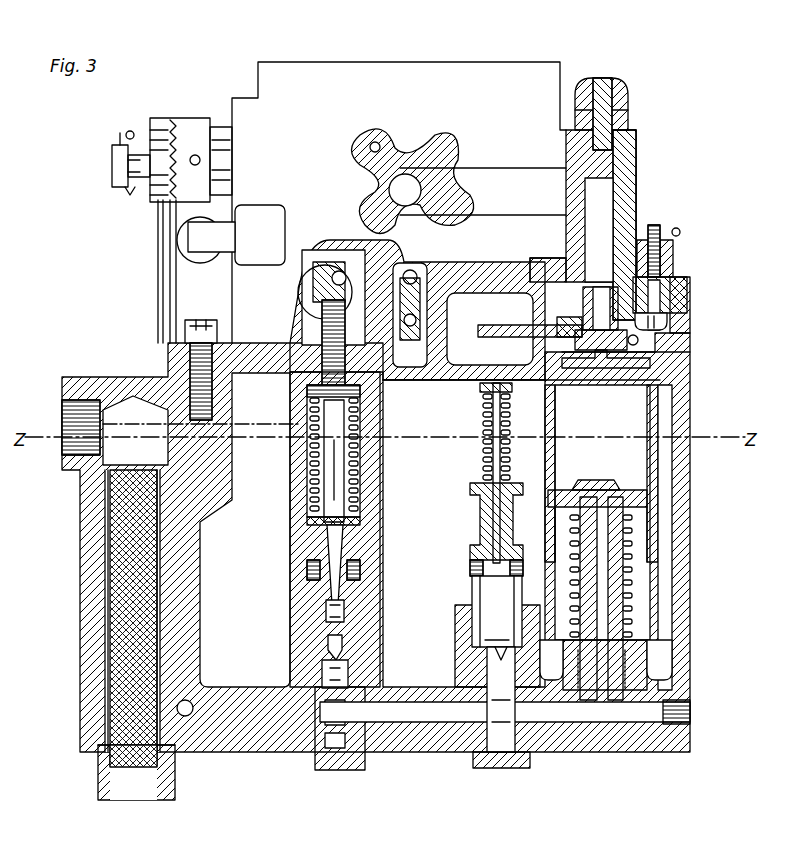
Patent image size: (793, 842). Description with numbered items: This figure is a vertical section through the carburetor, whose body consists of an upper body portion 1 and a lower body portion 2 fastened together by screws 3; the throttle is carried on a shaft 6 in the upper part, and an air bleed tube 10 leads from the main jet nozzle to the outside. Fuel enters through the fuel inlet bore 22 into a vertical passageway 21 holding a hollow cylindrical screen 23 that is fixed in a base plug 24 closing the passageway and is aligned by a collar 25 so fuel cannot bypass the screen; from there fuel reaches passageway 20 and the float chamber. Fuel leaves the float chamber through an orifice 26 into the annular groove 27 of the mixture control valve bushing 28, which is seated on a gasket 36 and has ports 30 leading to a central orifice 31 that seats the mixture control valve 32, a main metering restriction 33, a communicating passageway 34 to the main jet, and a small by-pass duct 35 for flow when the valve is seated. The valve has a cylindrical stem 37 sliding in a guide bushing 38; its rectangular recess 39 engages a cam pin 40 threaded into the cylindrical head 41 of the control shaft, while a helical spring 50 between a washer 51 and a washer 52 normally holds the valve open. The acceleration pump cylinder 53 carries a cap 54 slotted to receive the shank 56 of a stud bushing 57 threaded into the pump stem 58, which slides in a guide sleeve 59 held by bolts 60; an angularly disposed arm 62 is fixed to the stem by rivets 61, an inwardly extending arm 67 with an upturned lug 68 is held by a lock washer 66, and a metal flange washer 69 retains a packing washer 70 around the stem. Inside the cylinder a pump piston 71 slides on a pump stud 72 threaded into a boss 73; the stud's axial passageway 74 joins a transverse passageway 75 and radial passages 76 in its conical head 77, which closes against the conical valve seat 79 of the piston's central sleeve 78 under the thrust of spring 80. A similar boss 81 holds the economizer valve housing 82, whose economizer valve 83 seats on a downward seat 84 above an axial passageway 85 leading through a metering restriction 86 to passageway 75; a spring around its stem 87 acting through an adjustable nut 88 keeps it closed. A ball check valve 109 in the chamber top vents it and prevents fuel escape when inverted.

The upper body portion 1 is at (168, 362).
The lower body portion 2 is at (84, 390).
The screws 3 is at (212, 338).
The throttle shaft 6 is at (112, 162).
The air bleed tube 10 is at (163, 440).
The passageway 20 is at (190, 716).
The vertical passageway 21 is at (104, 632).
The fuel inlet bore 22 is at (80, 424).
The hollow cylindrical screen 23 is at (110, 590).
The base plug 24 is at (100, 785).
The collar 25 is at (100, 488).
The orifice 26 is at (245, 530).
The annular groove 27 is at (366, 584).
The mixture control valve bushing 28 is at (362, 555).
The ports 30 is at (352, 568).
The central orifice 31 is at (340, 612).
The mixture control valve 32 is at (340, 494).
The main metering restriction 33 is at (320, 668).
The communicating passageway 34 is at (330, 708).
The by-pass duct 35 is at (325, 624).
The gasket 36 is at (350, 644).
The cylindrical stem 37 is at (280, 434).
The guide bushing 38 is at (292, 372).
The rectangular recess 39 is at (336, 272).
The cam pin 40 is at (340, 275).
The cylindrical head 41 is at (300, 284).
The helical spring 50 is at (360, 444).
The washer 51 is at (360, 518).
The washer 52 is at (378, 388).
The acceleration pump cylinder 53 is at (660, 445).
The cap 54 is at (650, 372).
The shank 56 is at (645, 385).
The stud bushing 57 is at (630, 354).
The pump stem 58 is at (636, 148).
The guide sleeve 59 is at (638, 182).
The bolts 60 is at (658, 238).
The rivets 61 is at (628, 92).
The angularly disposed arm 62 is at (608, 78).
The lock washer 66 is at (640, 338).
The inwardly extending arm 67 is at (500, 324).
The upturned lug 68 is at (520, 322).
The metal flange washer 69 is at (628, 322).
The packing washer 70 is at (648, 310).
The pump piston 71 is at (640, 497).
The pump stud 72 is at (630, 628).
The boss 73 is at (652, 665).
The axial passageway 74 is at (604, 590).
The transverse passageway 75 is at (640, 714).
The radial passages 76 is at (612, 488).
The conical head 77 is at (592, 488).
The central sleeve 78 is at (650, 540).
The conical valve seat 79 is at (640, 515).
The spring 80 is at (635, 572).
The boss 81 is at (470, 620).
The economizer valve housing 82 is at (478, 590).
The economizer valve 83 is at (502, 578).
The valve seat 84 is at (478, 560).
The axial passageway 85 is at (500, 602).
The metering restriction 86 is at (505, 668).
The stem 87 is at (504, 416).
The adjustable nut 88 is at (502, 388).
The ball check valve 109 is at (463, 315).